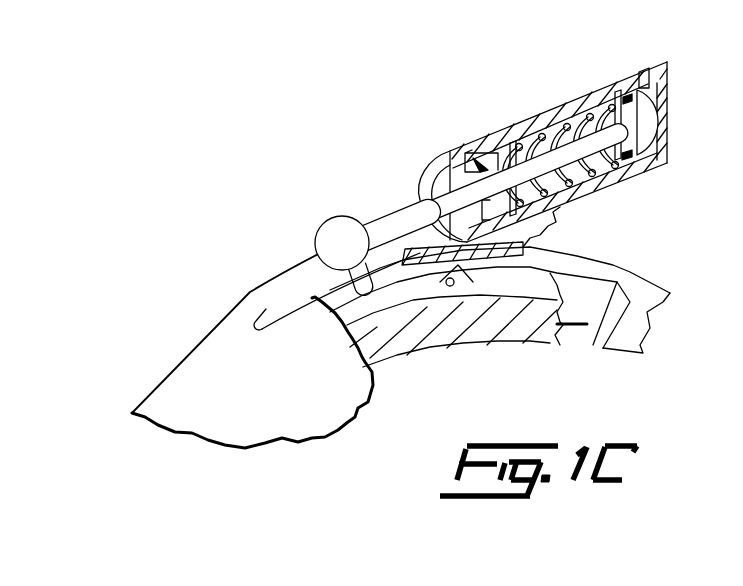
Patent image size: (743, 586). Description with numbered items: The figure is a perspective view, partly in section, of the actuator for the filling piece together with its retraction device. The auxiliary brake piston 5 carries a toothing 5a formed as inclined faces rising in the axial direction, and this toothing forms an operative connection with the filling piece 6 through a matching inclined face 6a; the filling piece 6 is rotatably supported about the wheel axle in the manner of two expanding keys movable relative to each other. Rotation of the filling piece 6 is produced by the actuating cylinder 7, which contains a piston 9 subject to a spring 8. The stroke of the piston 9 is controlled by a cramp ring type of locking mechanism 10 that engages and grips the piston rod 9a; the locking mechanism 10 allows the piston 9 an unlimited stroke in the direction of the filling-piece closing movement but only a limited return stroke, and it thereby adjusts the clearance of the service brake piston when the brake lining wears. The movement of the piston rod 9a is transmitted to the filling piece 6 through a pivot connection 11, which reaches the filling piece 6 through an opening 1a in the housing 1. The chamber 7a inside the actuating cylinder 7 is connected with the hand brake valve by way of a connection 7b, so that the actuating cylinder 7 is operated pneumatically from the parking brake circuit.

The housing 1 is at (187, 375).
The opening in the housing 1a is at (263, 318).
The auxiliary brake piston 5 is at (487, 332).
The toothing 5a is at (452, 286).
The filling piece 6 is at (577, 268).
The inclined face 6a is at (587, 305).
The actuating cylinder 7 is at (596, 110).
The chamber 7a is at (657, 130).
The connection 7b is at (644, 74).
The spring 8 is at (566, 128).
The piston 9 is at (619, 102).
The piston rod 9a is at (543, 148).
The locking mechanism 10 is at (483, 163).
The pivot connection 11 is at (335, 232).